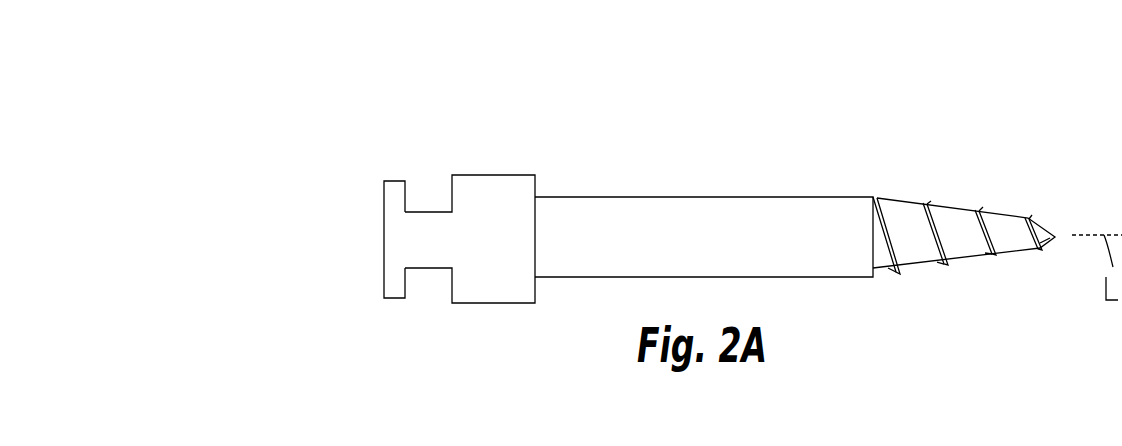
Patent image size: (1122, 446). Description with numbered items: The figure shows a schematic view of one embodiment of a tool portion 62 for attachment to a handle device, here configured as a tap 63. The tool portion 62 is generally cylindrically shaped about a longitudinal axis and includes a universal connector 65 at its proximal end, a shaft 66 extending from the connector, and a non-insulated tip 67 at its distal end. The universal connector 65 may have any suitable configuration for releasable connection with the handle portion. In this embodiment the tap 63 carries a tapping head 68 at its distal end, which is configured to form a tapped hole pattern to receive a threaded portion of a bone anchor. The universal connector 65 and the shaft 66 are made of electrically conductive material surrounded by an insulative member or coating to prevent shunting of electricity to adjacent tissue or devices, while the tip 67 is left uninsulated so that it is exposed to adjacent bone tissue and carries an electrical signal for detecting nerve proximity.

The tool portion 62 is at (295, 128).
The tap 63 is at (342, 266).
The universal connector 65 is at (384, 236).
The shaft 66 is at (687, 197).
The tip 67 is at (1010, 170).
The tapping head 68 is at (926, 206).